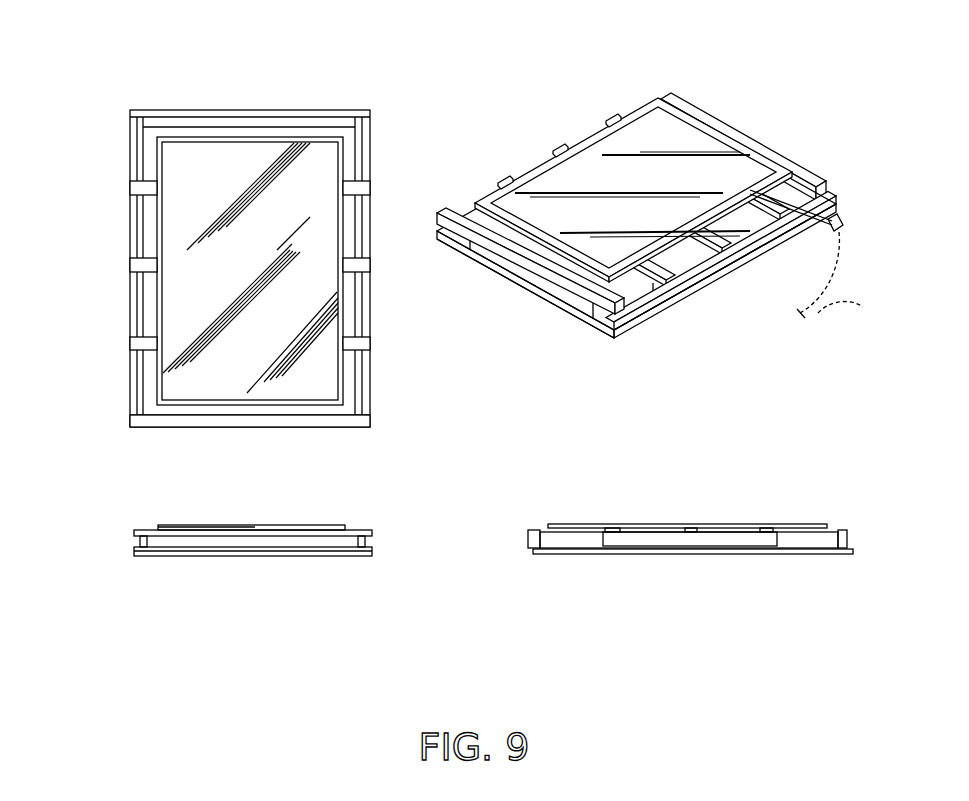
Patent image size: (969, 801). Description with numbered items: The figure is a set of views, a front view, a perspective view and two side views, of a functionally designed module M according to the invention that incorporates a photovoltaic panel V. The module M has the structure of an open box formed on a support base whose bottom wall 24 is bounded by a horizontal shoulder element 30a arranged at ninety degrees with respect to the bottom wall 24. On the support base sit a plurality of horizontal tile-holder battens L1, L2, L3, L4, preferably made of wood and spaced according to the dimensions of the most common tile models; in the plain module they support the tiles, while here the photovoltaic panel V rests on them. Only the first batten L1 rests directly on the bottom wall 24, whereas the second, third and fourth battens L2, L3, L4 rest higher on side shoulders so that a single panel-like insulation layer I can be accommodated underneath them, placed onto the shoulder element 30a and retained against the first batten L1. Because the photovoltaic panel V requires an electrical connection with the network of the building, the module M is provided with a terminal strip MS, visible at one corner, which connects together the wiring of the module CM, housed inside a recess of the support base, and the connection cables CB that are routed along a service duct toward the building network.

The photovoltaic panel V is at (221, 156).
The module M is at (342, 94).
The first tile-holder batten L1 is at (128, 421).
The second tile-holder batten L2 is at (128, 343).
The third tile-holder batten L3 is at (128, 266).
The fourth tile-holder batten L4 is at (128, 191).
The terminal strip MS is at (840, 214).
The wiring of the module CM is at (806, 228).
The connection cables CB is at (836, 283).
The horizontal shoulder element 30a is at (514, 280).
The bottom wall 24 is at (664, 318).
The insulation layer I is at (832, 535).